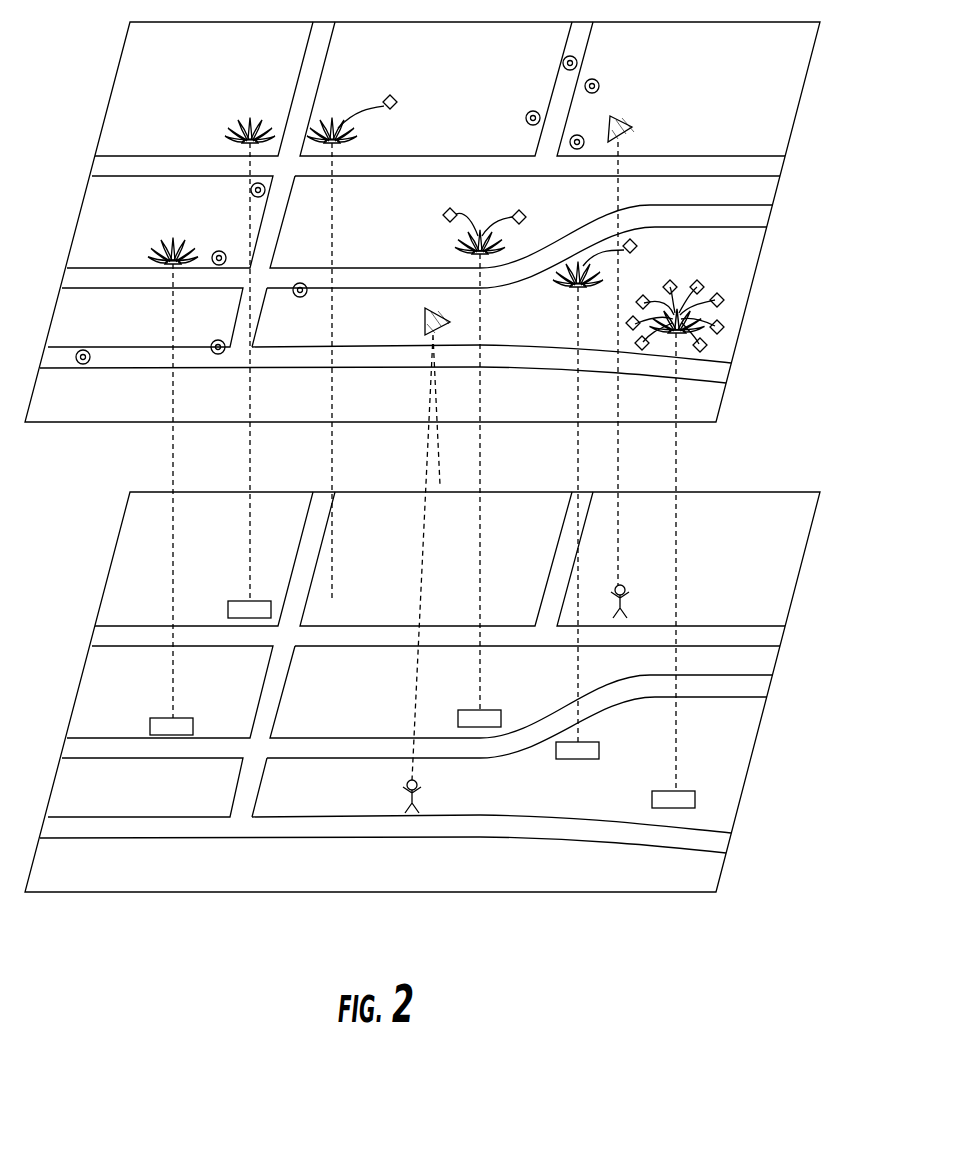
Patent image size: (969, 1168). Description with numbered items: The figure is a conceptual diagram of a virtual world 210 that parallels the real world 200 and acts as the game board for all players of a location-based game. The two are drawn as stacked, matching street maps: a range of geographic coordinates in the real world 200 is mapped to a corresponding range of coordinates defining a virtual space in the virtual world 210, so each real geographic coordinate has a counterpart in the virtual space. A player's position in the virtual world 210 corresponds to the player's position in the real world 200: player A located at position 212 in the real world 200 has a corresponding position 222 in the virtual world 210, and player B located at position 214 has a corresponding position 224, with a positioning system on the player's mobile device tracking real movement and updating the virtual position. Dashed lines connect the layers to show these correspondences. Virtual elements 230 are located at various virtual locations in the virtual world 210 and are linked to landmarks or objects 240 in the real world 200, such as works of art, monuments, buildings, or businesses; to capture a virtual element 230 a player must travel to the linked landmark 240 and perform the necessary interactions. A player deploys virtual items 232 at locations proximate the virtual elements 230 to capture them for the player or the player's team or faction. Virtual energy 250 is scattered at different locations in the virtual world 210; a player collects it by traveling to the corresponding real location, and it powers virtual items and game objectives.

The real world 200 is at (792, 600).
The virtual world 210 is at (792, 133).
The position of player A in the real world 212 is at (405, 783).
The position of player B in the real world 214 is at (627, 588).
The corresponding position of player A in the virtual world 222 is at (441, 318).
The corresponding position of player B in the virtual world 224 is at (631, 124).
The virtual elements 230 is at (251, 120).
The virtual items 232 is at (397, 100).
The landmarks or objects in the real world 240 is at (242, 599).
The virtual energy 250 is at (597, 85).